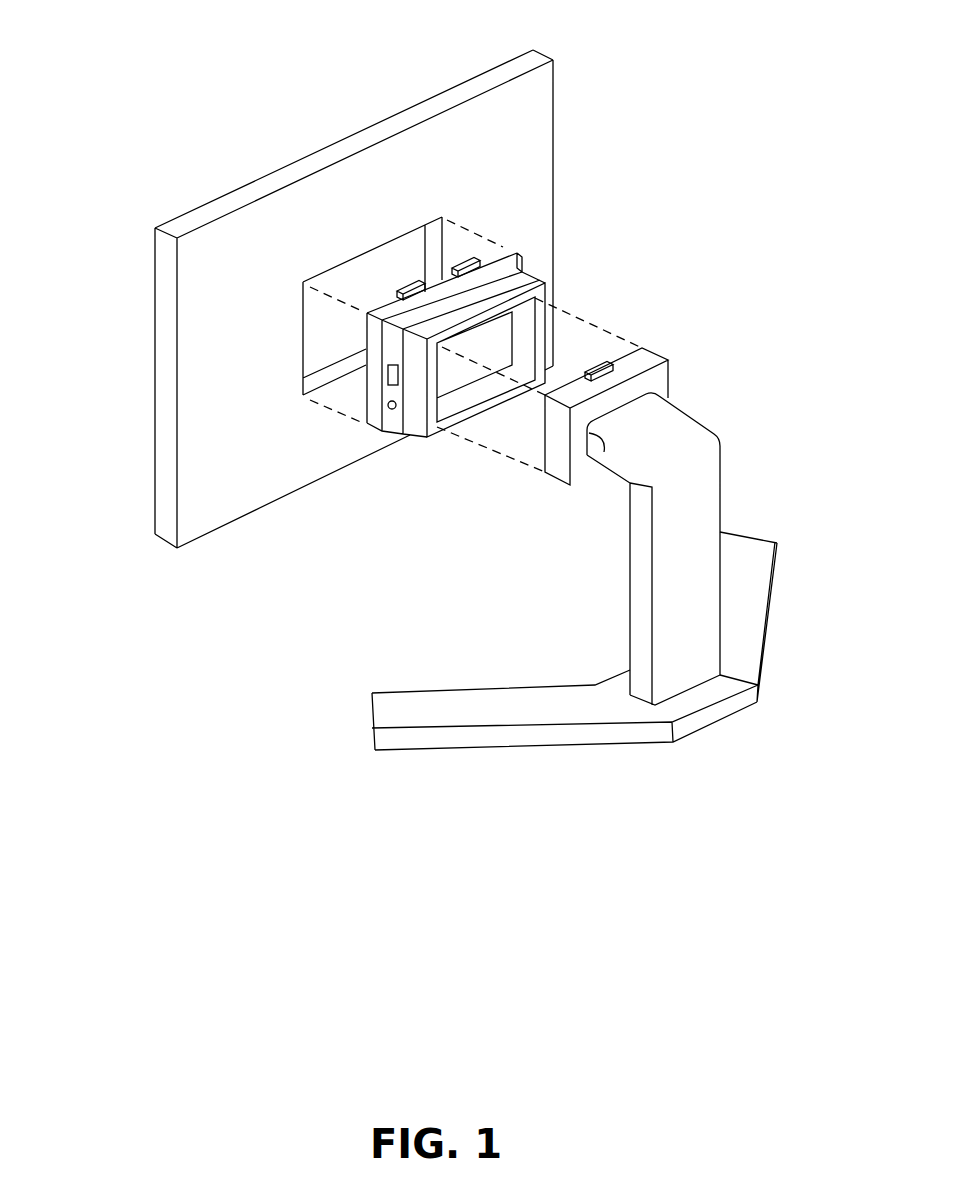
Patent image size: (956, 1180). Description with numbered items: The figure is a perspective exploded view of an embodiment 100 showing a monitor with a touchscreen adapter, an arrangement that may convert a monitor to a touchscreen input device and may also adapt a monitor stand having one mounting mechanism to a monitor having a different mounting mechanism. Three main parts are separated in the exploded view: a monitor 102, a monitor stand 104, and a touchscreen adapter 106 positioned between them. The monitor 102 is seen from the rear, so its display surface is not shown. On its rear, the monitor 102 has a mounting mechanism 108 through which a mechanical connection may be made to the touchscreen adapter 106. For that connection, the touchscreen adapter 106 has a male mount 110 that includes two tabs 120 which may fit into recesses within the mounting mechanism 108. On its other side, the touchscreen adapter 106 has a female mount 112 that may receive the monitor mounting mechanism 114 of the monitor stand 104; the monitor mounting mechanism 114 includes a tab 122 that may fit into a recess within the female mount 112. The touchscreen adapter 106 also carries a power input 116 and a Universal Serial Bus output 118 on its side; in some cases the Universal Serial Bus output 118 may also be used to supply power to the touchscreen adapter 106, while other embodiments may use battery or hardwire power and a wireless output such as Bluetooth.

The embodiment showing a monitor with a touchscreen adapter 100 is at (316, 810).
The monitor 102 is at (167, 487).
The monitor stand 104 is at (710, 714).
The touchscreen adapter 106 is at (396, 424).
The mounting mechanism 108 is at (330, 268).
The male mount 110 is at (507, 253).
The female mount 112 is at (522, 318).
The monitor mounting mechanism 114 is at (640, 363).
The power input 116 is at (392, 414).
The Universal Serial Bus output 118 is at (388, 377).
The tabs 120 is at (462, 262).
The tab 122 is at (613, 377).